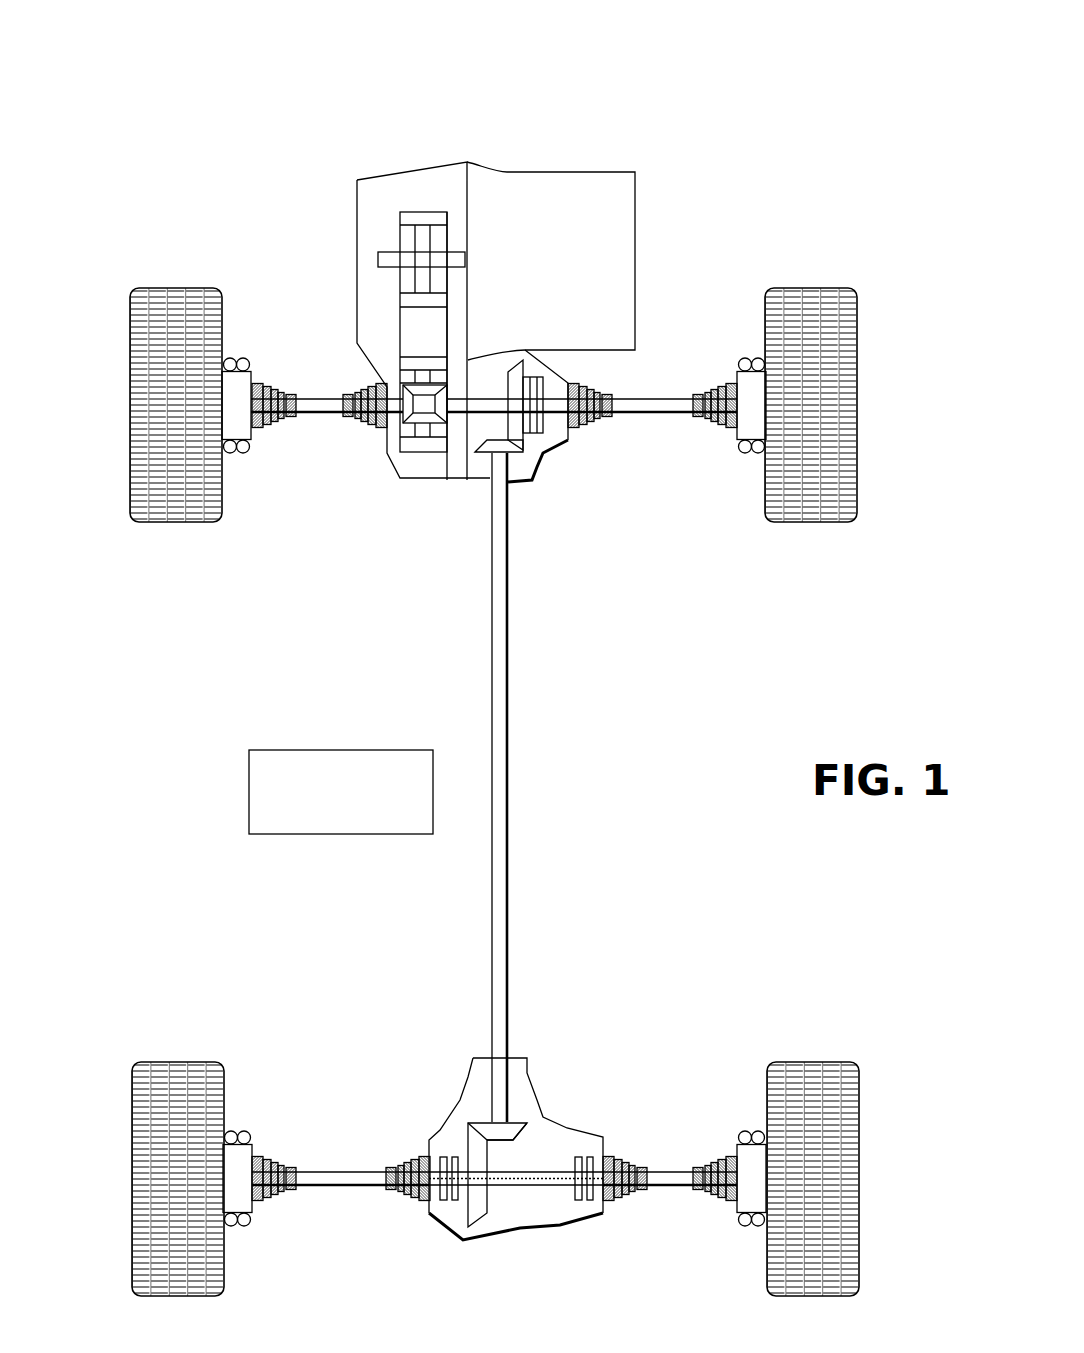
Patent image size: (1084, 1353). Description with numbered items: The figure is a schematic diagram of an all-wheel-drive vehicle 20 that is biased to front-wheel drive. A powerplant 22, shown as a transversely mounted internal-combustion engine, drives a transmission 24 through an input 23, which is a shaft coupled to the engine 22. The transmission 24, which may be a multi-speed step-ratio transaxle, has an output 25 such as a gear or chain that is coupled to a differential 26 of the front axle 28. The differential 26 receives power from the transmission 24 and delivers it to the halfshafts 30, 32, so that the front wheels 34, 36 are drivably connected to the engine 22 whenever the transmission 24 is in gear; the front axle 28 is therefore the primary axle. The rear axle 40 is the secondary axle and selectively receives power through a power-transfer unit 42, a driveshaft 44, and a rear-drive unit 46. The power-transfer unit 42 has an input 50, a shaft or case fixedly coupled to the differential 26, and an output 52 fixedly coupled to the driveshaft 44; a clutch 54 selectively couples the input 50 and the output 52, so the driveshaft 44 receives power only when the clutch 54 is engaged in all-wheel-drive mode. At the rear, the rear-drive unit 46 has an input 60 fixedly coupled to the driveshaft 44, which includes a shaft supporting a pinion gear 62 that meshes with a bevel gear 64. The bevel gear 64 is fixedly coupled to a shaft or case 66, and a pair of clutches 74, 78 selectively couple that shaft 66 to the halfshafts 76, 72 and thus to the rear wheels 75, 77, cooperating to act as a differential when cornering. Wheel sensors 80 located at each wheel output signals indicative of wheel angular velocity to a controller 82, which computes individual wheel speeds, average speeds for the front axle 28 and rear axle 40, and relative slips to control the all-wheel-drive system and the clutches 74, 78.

The all-wheel-drive vehicle 20 is at (793, 67).
The powerplant 22 is at (568, 172).
The input 23 is at (457, 258).
The transmission 24 is at (432, 168).
The output 25 is at (418, 328).
The differential 26 is at (400, 460).
The front axle 28 is at (873, 265).
The halfshaft 30 is at (646, 398).
The halfshaft 32 is at (330, 398).
The front wheel 34 is at (127, 398).
The front wheel 36 is at (860, 398).
The rear axle 40 is at (873, 1040).
The power-transfer unit 42 is at (527, 512).
The driveshaft 44 is at (510, 776).
The rear-drive unit 46 is at (595, 1080).
The input 50 is at (490, 383).
The output 52 is at (522, 467).
The clutch 54 is at (545, 428).
The input 60 is at (500, 1080).
The pinion gear 62 is at (530, 1135).
The bevel gear 64 is at (472, 1157).
The shaft or case 66 is at (528, 1190).
The halfshaft 72 is at (350, 1165).
The clutch 74 is at (588, 1210).
The wheel 75 is at (860, 1190).
The halfshaft 76 is at (672, 1170).
The wheel 77 is at (130, 1190).
The clutch 78 is at (442, 1212).
The wheel sensor 80 is at (245, 452).
The controller 82 is at (340, 748).